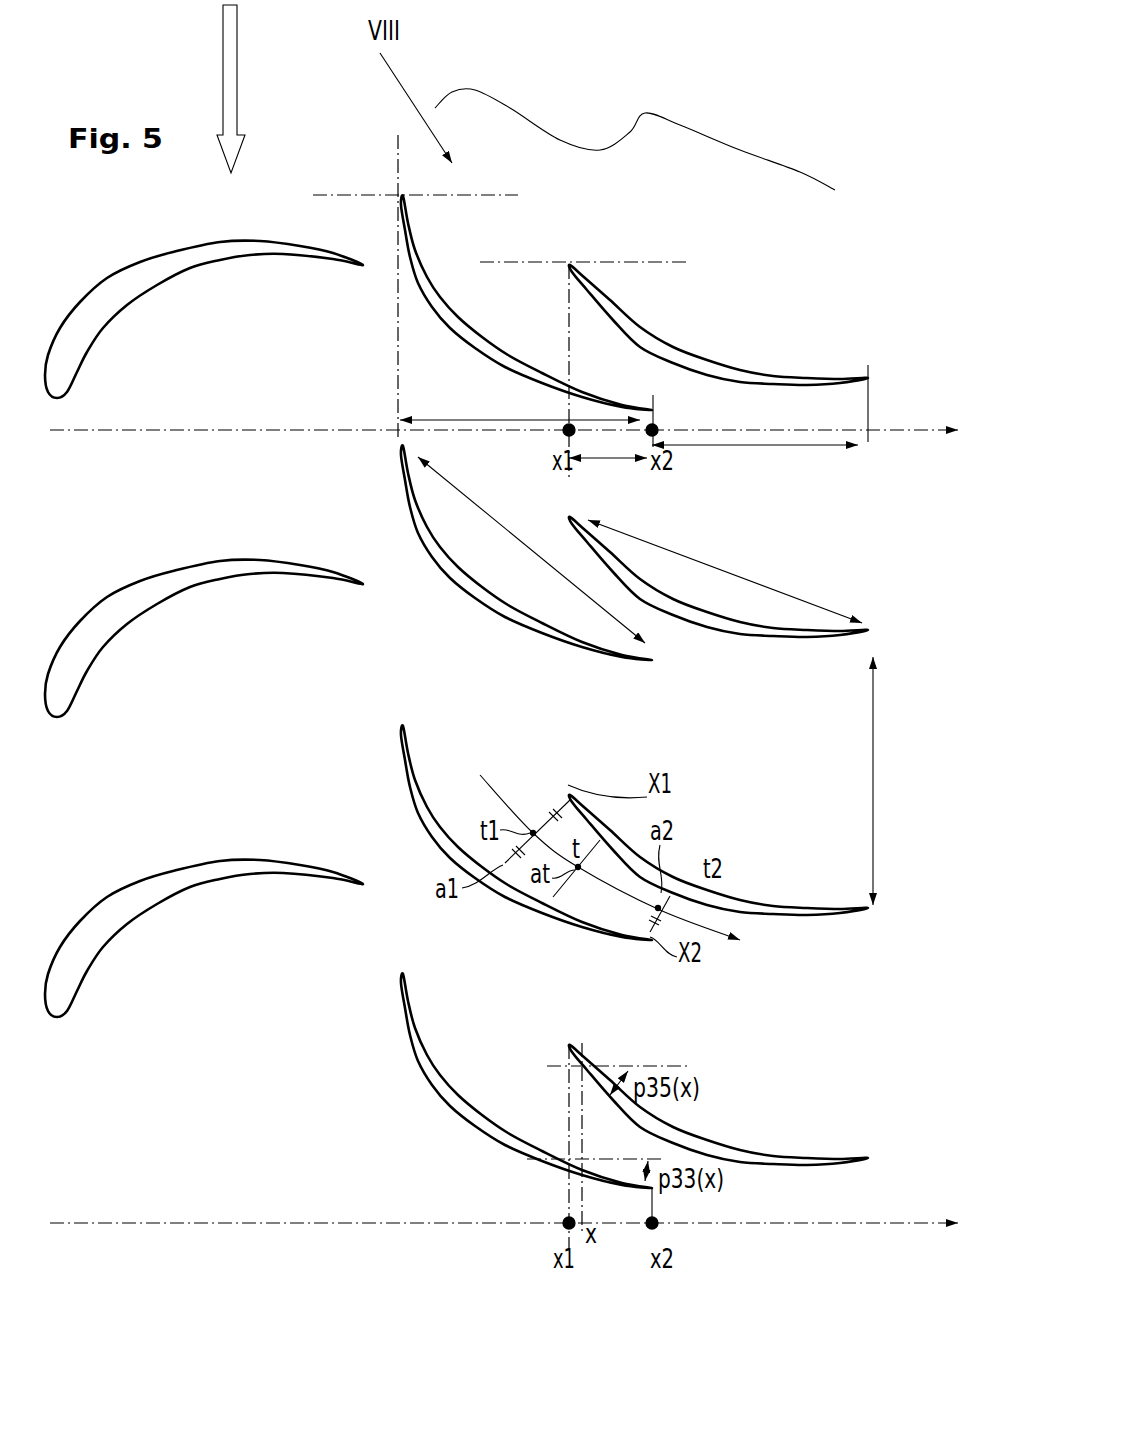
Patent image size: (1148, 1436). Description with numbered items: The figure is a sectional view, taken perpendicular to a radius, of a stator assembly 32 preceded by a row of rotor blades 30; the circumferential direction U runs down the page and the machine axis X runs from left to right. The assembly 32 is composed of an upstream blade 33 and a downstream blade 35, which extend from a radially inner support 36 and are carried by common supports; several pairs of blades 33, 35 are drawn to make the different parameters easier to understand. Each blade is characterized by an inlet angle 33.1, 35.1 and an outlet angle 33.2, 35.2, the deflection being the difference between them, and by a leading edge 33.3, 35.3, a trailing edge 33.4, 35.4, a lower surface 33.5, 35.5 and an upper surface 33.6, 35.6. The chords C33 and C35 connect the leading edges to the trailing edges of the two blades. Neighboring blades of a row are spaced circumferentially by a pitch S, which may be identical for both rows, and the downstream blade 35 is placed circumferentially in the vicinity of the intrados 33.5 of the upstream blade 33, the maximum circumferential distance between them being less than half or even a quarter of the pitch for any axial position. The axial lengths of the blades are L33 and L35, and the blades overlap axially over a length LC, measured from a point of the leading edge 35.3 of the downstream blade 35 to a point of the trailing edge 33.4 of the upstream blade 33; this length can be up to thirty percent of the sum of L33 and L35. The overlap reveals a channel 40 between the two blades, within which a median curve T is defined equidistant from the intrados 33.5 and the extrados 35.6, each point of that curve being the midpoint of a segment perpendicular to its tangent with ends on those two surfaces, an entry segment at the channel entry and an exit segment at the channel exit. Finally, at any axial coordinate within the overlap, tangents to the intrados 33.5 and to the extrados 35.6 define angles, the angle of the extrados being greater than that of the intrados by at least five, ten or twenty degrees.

The rotor blade 30 is at (130, 275).
The stator assembly 32 is at (635, 135).
The upstream blade 33 is at (447, 305).
The downstream blade 35 is at (703, 360).
The radially inner support 36 is at (668, 207).
The channel 40 is at (625, 375).
The inlet angle 33.1 is at (445, 198).
The outlet angle 33.2 is at (662, 363).
The leading edge 33.3 is at (420, 457).
The trailing edge 33.4 is at (655, 657).
The lower surface 33.5 is at (430, 540).
The extrados 33.6 is at (438, 562).
The inlet angle 35.1 is at (617, 266).
The outlet angle 35.2 is at (893, 413).
The leading edge 35.3 is at (590, 520).
The trailing edge 35.4 is at (872, 632).
The lower surface 35.5 is at (758, 628).
The extrados 35.6 is at (838, 637).
The circumferential direction U is at (237, 62).
The axis X is at (917, 432).
The pitch S is at (859, 781).
The median curve T is at (500, 800).
The axial length of the upstream blade L33 is at (520, 407).
The axial length of the downstream blade L35 is at (755, 461).
The axial overlap length LC is at (608, 475).
The chord of the upstream blade C33 is at (531, 550).
The chord of the downstream blade C35 is at (725, 571).